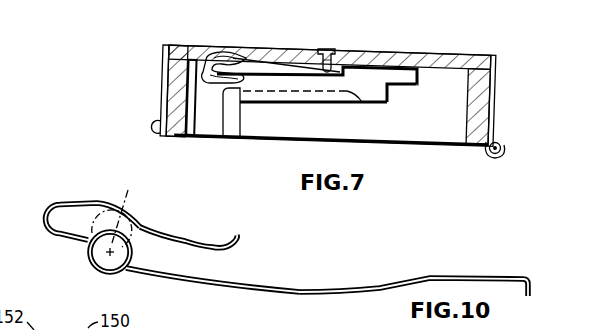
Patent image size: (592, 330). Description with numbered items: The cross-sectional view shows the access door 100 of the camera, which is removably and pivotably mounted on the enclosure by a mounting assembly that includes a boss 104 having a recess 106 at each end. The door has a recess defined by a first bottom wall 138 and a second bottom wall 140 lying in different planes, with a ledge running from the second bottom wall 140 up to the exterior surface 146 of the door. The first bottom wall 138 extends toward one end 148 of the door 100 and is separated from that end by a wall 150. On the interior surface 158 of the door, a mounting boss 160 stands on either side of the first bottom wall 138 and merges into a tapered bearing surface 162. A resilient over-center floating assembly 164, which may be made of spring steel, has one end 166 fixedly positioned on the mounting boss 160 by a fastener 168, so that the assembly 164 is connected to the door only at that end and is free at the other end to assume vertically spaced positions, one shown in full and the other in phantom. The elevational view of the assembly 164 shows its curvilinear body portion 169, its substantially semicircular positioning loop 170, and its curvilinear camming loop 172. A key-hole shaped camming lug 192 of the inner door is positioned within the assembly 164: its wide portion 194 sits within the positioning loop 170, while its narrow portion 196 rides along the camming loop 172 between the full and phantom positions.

In FIG. 7, the access door 100 is at (500, 105).
In FIG. 7, the boss 104 is at (500, 153).
In FIG. 7, the recess 106 is at (500, 144).
In FIG. 7, the first bottom wall 138 is at (325, 103).
In FIG. 7, the second bottom wall 140 is at (405, 85).
In FIG. 7, the exterior surface 146 is at (405, 57).
In FIG. 7, the end of the access door 148 is at (165, 104).
In FIG. 7, the wall 150 is at (242, 118).
In FIG. 7, the interior surface 158 is at (447, 60).
In FIG. 7, the mounting boss 160 is at (345, 65).
In FIG. 7, the tapered bearing surface 162 is at (246, 48).
In FIG. 7, the resilient over-center floating assembly 164 is at (188, 83).
In FIG. 10, the resilient over-center floating assembly 164 is at (342, 288).
In FIG. 7, the end of floating assembly 166 is at (370, 88).
In FIG. 10, the end of floating assembly 166 is at (492, 276).
In FIG. 7, the fastener 168 is at (323, 48).
In FIG. 10, the body portion 169 is at (223, 282).
In FIG. 10, the positioning loop 170 is at (117, 278).
In FIG. 10, the camming loop 172 is at (87, 200).
In FIG. 10, the camming lug 192 is at (86, 258).
In FIG. 10, the wide portion 194 is at (103, 265).
In FIG. 10, the narrow portion 196 is at (113, 230).